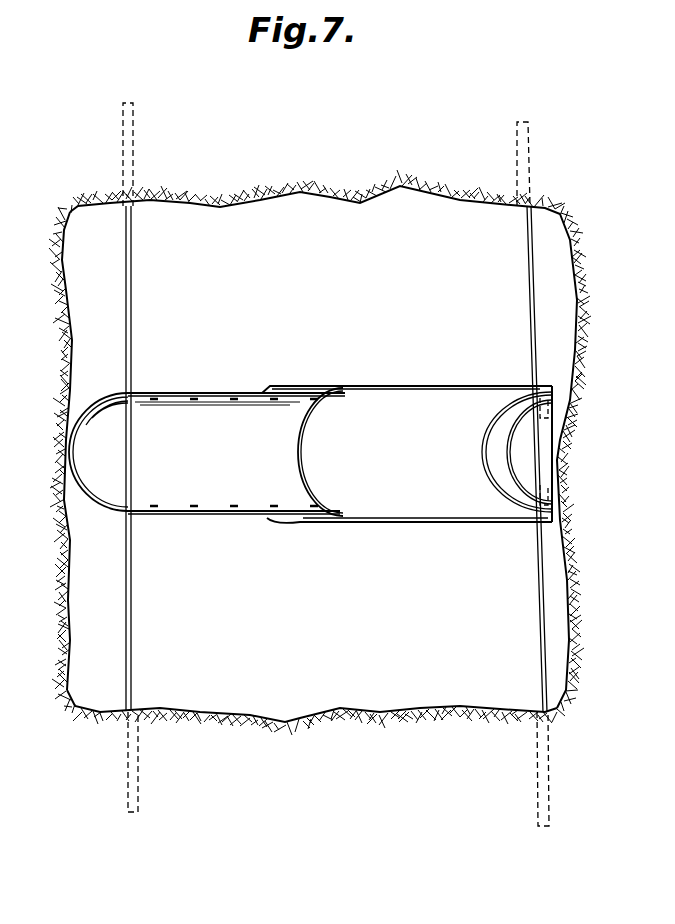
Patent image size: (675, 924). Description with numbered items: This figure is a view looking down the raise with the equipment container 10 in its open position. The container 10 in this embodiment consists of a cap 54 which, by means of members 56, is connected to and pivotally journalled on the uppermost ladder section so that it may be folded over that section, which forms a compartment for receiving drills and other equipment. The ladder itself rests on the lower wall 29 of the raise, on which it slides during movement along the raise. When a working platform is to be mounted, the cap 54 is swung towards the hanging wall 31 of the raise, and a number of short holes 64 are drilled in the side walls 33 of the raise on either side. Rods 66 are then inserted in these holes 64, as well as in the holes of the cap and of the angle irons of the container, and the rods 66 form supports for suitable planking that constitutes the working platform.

The container 10 is at (535, 453).
The lower wall 29 is at (565, 342).
The hanging wall 31 is at (57, 272).
The side walls 33 is at (300, 195).
The cap 54 is at (184, 417).
The members 56 is at (354, 389).
The short holes 64 is at (135, 116).
The rods 66 is at (130, 300).